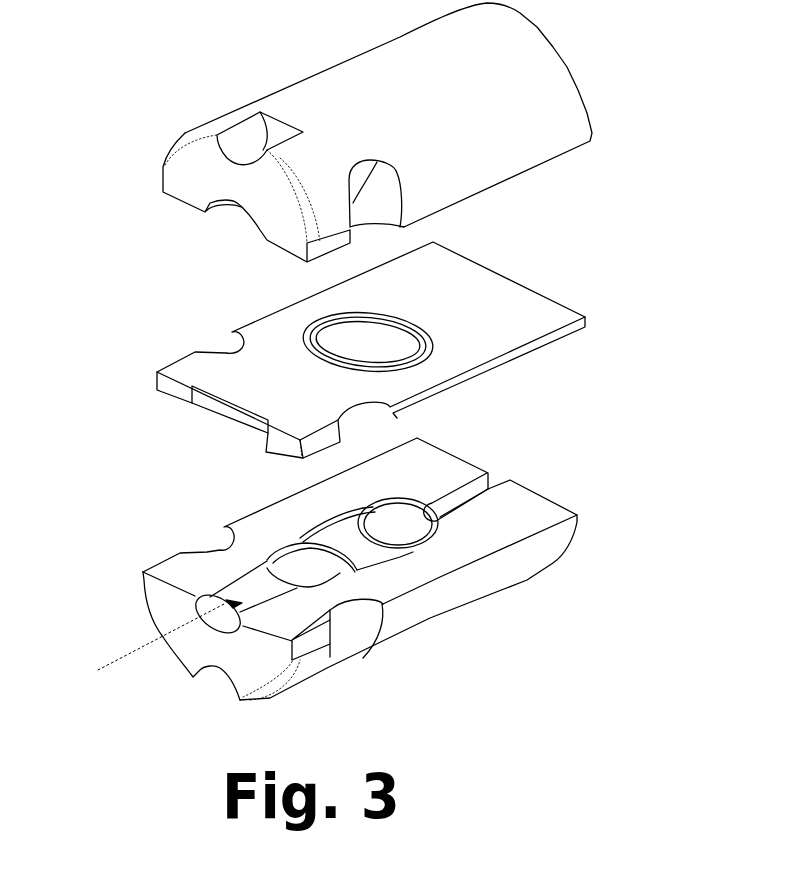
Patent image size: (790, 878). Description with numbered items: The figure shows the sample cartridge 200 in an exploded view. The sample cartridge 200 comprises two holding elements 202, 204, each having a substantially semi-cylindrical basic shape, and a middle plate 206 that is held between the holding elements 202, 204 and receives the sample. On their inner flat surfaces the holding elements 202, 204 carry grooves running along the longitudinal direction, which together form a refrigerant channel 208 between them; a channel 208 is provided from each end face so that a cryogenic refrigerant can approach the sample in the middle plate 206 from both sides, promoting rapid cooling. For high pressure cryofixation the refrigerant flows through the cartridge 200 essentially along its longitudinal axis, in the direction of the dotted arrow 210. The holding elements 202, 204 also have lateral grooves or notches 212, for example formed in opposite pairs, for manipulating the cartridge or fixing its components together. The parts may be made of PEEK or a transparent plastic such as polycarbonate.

The sample cartridge 200 is at (521, 741).
The holding element 202 is at (453, 600).
The holding element 204 is at (353, 78).
The middle plate 206 is at (537, 325).
The refrigerant channel 208 is at (492, 480).
The dotted arrow 210 is at (138, 656).
The lateral grooves or notches 212 is at (357, 201).